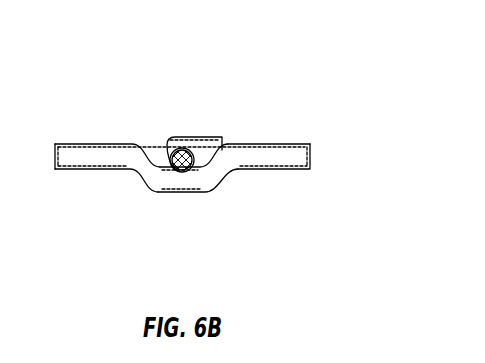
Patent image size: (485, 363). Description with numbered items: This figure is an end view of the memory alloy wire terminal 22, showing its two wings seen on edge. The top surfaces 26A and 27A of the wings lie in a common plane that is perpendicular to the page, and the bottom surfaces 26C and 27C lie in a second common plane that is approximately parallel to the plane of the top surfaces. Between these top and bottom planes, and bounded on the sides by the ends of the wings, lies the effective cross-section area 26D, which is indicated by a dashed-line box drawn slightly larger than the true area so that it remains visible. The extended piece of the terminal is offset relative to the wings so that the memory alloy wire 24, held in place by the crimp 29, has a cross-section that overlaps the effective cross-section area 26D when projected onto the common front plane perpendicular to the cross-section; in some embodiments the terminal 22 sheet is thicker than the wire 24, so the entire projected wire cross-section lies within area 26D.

The memory alloy wire terminal 22 is at (140, 61).
The memory alloy wire 24 is at (172, 153).
The top surface 26A is at (82, 143).
The bottom surface 26C is at (82, 170).
The effective cross-section area 26D is at (223, 182).
The top surface 27A is at (280, 145).
The bottom surface 27C is at (280, 168).
The crimp 29 is at (192, 137).